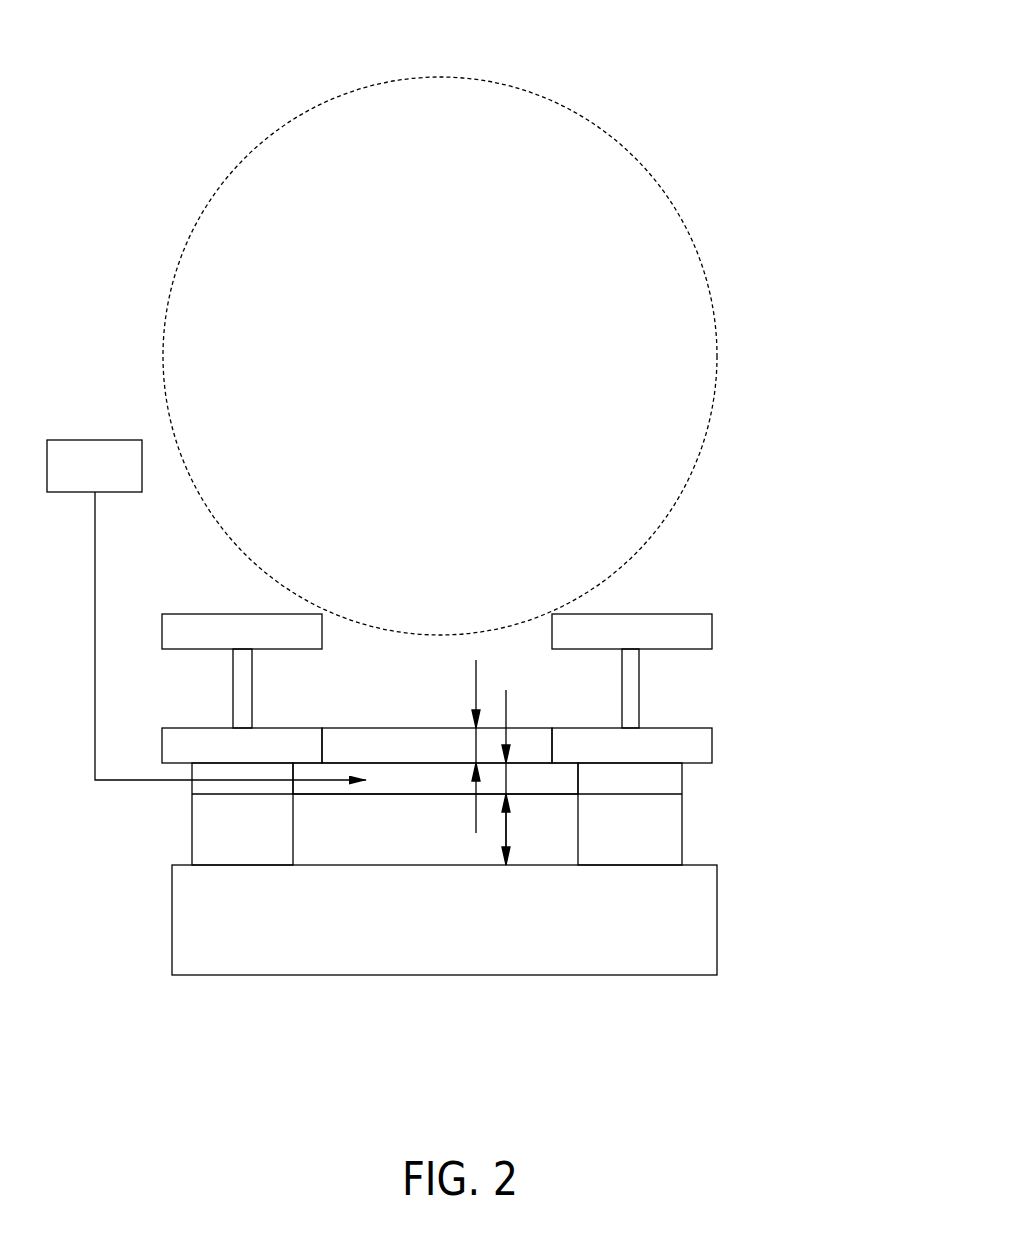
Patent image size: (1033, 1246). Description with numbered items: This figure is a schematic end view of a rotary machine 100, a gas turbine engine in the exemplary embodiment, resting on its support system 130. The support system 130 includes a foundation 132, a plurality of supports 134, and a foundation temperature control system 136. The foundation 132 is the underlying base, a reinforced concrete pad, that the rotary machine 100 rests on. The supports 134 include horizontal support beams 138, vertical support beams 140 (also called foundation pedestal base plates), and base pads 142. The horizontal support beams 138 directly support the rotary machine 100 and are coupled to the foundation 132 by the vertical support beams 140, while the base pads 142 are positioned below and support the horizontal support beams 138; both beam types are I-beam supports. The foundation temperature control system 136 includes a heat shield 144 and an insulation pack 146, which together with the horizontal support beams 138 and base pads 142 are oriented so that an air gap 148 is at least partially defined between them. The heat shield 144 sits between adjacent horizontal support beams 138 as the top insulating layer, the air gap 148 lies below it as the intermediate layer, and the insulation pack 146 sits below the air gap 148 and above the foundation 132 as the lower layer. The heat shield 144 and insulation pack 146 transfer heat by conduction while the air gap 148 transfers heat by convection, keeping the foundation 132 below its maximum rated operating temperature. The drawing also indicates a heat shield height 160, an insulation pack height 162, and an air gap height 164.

The rotary machine 100 is at (638, 85).
The support system 130 is at (713, 565).
The foundation 132 is at (698, 908).
The supports 134 is at (472, 680).
The foundation temperature control system 136 is at (598, 822).
The horizontal support beams 138 is at (177, 613).
The vertical support beams 140 is at (215, 787).
The base pads 142 is at (115, 482).
The heat shield 144 is at (430, 756).
The insulation pack 146 is at (293, 830).
The air gap 148 is at (430, 789).
The heat shield height 160 is at (473, 743).
The insulation pack height 162 is at (508, 828).
The air gap height 164 is at (508, 778).